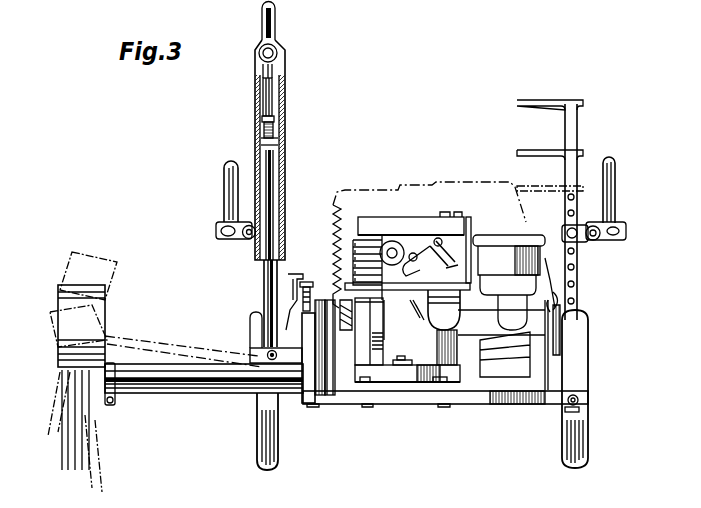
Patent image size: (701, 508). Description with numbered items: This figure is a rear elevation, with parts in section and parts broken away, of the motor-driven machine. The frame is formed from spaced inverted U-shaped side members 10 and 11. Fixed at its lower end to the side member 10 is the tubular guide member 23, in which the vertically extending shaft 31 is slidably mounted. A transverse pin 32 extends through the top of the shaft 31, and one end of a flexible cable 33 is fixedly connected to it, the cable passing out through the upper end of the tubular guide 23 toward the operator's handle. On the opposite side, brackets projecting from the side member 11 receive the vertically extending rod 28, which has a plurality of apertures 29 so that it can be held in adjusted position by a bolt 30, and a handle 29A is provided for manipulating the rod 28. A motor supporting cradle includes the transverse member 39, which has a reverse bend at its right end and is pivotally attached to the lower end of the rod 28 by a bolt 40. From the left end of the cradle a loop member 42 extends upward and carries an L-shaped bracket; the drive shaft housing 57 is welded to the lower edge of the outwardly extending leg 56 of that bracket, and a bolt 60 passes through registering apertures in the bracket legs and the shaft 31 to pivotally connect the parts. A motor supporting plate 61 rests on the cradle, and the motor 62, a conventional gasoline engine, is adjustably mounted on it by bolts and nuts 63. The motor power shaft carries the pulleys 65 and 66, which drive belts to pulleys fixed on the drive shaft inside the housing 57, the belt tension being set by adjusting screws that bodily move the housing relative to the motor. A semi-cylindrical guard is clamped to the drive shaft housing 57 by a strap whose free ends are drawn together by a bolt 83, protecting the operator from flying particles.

The side member 10 is at (243, 238).
The side member 11 is at (598, 239).
The tubular guide member 23 is at (270, 86).
The vertically extending rod 28 is at (568, 176).
The apertures 29 is at (567, 197).
The handle 29A is at (548, 152).
The bolt 30 is at (567, 229).
The vertically extending shaft 31 is at (268, 287).
The transverse pin 32 is at (269, 130).
The flexible cable 33 is at (267, 90).
The transverse member 39 is at (422, 404).
The bolt 40 is at (580, 402).
The loop member 42 is at (308, 338).
The leg 56 is at (258, 350).
The drive shaft housing 57 is at (195, 390).
The bolt 60 is at (264, 356).
The motor supporting plate 61 is at (375, 394).
The motor 62 is at (409, 331).
The bolts and nuts 63 is at (372, 386).
The pulley 65 is at (318, 308).
The pulley 66 is at (340, 315).
The bolt 83 is at (118, 420).